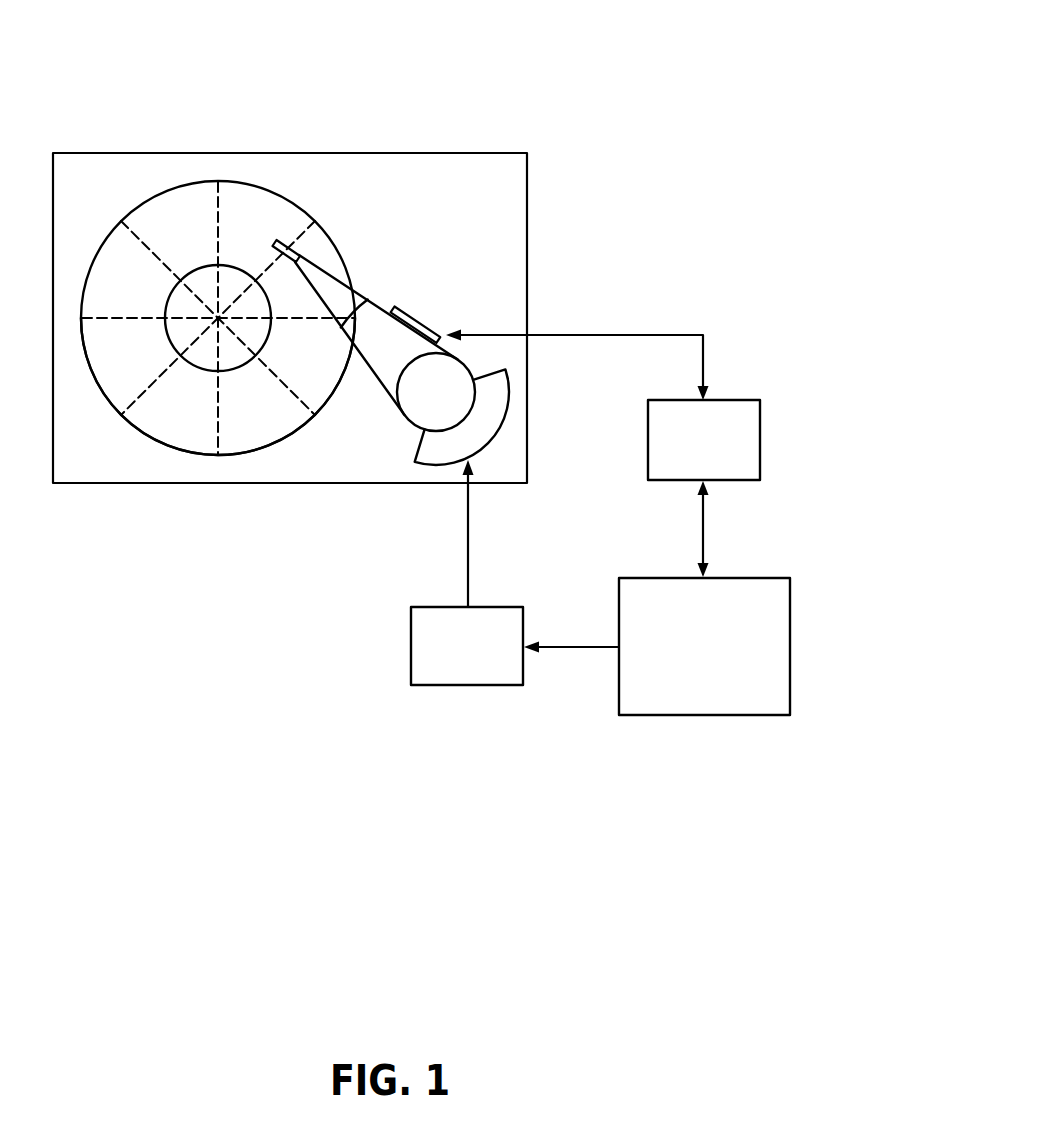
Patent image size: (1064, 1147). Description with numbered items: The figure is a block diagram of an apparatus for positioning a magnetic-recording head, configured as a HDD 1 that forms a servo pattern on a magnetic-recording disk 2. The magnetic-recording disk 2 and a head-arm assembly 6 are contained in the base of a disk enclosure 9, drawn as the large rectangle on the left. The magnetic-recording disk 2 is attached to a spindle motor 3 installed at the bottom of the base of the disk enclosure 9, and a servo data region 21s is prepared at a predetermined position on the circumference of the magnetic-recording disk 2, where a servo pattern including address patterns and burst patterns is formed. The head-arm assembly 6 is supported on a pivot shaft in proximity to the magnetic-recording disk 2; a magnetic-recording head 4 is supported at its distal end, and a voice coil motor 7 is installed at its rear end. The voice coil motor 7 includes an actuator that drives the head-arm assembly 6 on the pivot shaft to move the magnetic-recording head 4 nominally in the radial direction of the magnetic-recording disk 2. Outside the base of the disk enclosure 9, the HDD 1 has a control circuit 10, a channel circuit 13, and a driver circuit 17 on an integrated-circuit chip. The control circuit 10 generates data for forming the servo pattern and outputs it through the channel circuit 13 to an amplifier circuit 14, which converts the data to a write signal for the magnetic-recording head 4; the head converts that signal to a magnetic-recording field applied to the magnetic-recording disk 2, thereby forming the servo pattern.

The HDD 1 is at (679, 88).
The magnetic-recording disk 2 is at (150, 212).
The spindle motor 3 is at (197, 310).
The magnetic-recording head 4 is at (276, 240).
The head-arm assembly 6 is at (378, 386).
The voice coil motor 7 is at (432, 454).
The disk enclosure 9 is at (441, 153).
The control circuit 10 is at (734, 578).
The channel circuit 13 is at (734, 400).
The amplifier circuit 14 is at (408, 312).
The driver circuit 17 is at (467, 685).
The servo data region 21s is at (220, 428).